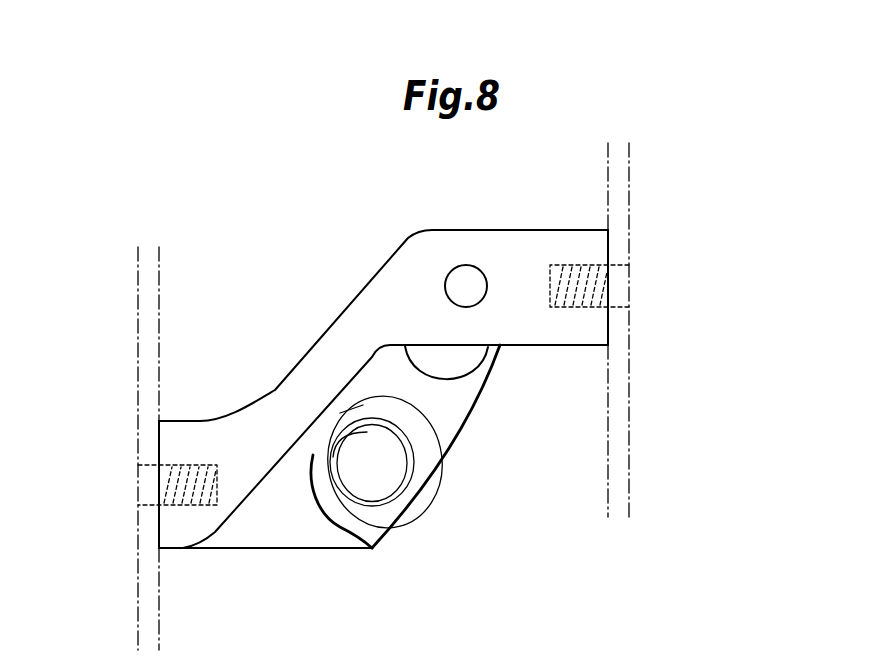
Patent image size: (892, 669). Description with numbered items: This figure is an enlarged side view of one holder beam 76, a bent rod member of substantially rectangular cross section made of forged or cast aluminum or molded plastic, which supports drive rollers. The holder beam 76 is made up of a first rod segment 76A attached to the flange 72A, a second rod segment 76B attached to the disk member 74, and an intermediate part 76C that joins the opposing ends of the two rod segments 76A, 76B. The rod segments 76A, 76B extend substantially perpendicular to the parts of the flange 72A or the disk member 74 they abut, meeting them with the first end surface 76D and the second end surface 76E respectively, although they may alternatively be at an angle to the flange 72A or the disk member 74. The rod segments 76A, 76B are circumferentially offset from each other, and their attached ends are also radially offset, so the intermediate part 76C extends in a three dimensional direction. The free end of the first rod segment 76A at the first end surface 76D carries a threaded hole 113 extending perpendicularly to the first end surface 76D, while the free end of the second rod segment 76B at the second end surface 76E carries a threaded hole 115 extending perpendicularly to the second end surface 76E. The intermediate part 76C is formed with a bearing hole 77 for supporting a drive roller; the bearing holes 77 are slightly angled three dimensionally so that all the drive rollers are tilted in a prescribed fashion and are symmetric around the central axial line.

The holder beam 76 is at (390, 387).
The flange 72A is at (155, 267).
The disk member 74 is at (620, 470).
The first rod segment 76A is at (192, 523).
The second rod segment 76B is at (567, 313).
The intermediate part 76C is at (455, 424).
The first end surface 76D is at (159, 520).
The second end surface 76E is at (608, 252).
The bearing hole 77 is at (433, 351).
The threaded hole 113 is at (203, 467).
The threaded hole 115 is at (580, 263).